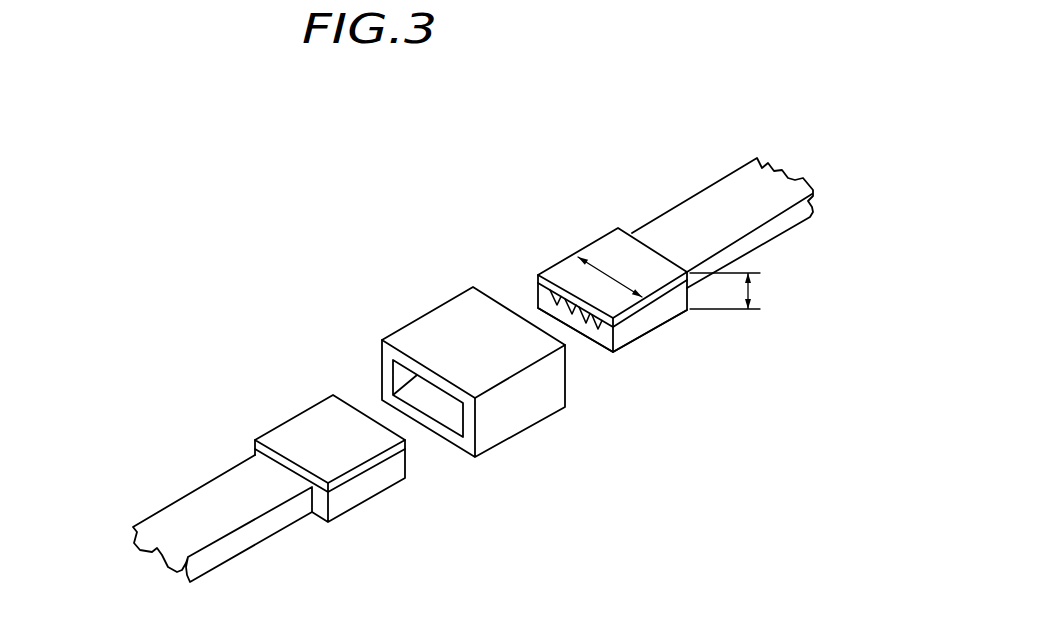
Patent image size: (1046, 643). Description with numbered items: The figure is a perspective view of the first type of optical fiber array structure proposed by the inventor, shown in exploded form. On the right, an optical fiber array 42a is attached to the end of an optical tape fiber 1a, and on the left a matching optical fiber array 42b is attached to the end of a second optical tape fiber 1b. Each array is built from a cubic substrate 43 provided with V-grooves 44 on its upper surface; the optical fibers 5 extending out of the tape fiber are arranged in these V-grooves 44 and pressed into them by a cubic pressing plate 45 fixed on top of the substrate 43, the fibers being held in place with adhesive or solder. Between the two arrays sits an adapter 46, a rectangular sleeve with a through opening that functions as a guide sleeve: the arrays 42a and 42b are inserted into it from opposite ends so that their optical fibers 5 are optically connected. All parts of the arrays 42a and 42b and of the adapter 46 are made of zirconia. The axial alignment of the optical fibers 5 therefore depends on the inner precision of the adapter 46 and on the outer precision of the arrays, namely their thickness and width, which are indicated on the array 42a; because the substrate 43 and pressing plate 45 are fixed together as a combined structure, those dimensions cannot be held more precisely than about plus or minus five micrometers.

The optical tape fiber 1a is at (693, 208).
The optical tape fiber 1b is at (173, 510).
The optical fiber array 42a is at (561, 256).
The optical fiber array 42b is at (294, 411).
The substrate 43 is at (645, 321).
The V-groove 44 is at (584, 332).
The pressing plate 45 is at (663, 293).
The adapter 46 is at (410, 310).
The optical fiber 5 is at (598, 327).